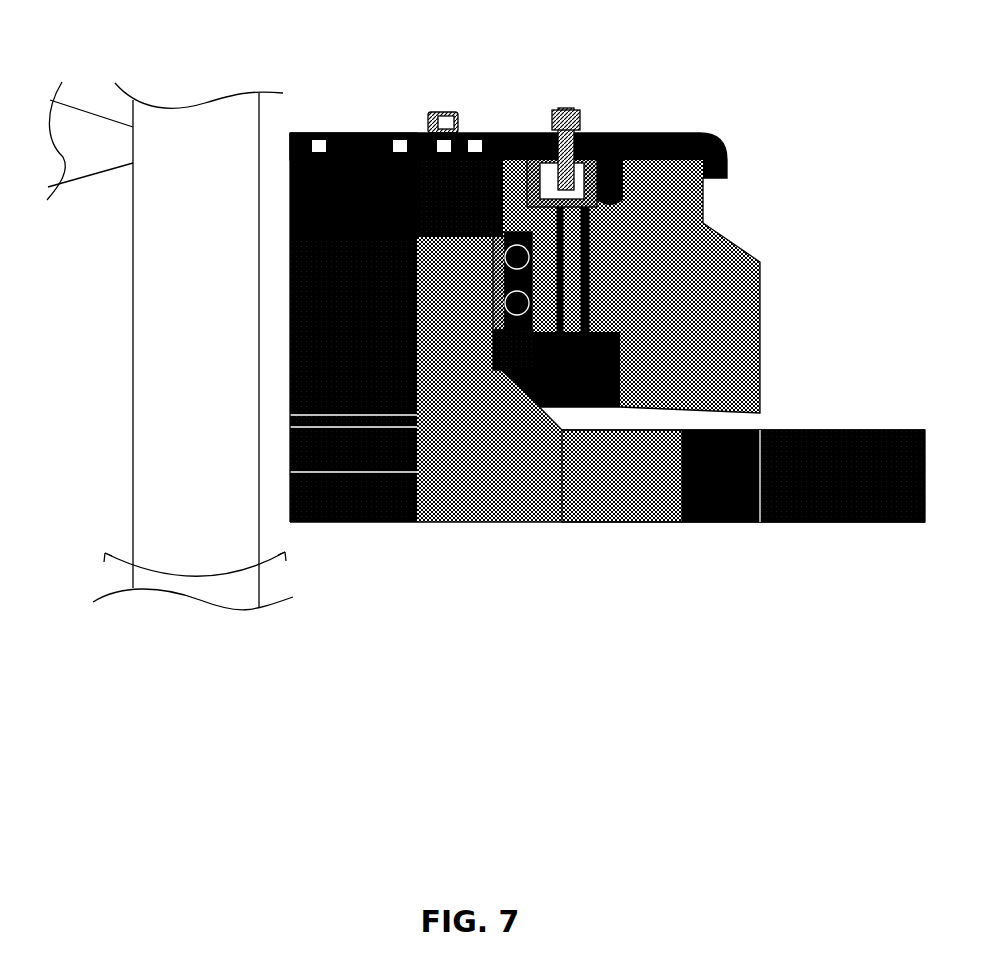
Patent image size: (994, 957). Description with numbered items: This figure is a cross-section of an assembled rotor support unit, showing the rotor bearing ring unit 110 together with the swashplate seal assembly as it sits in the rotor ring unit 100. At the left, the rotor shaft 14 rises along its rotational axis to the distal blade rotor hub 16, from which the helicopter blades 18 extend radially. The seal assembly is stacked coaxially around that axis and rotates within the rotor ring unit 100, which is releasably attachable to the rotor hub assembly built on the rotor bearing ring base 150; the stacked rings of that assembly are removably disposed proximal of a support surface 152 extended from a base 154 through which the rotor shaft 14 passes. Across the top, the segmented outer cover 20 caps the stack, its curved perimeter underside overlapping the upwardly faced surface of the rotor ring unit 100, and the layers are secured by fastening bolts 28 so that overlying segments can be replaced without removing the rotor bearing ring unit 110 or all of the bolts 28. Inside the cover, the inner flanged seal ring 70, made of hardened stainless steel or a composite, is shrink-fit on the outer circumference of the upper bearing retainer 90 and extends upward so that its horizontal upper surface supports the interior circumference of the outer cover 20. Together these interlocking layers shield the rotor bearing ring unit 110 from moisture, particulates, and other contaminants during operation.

The rotor shaft 14 is at (193, 351).
The distal blade rotor hub 16 is at (218, 102).
The helicopter blades 18 is at (90, 141).
The outer cover 20 is at (670, 133).
The bolts 28 is at (562, 107).
The inner flanged seal ring 70 is at (505, 133).
The upper bearing retainer 90 is at (390, 133).
The rotor ring unit 100 is at (730, 247).
The rotor bearing ring unit 110 is at (290, 137).
The rotor bearing ring base 150 is at (495, 523).
The support surface 152 is at (290, 243).
The base 154 is at (848, 430).